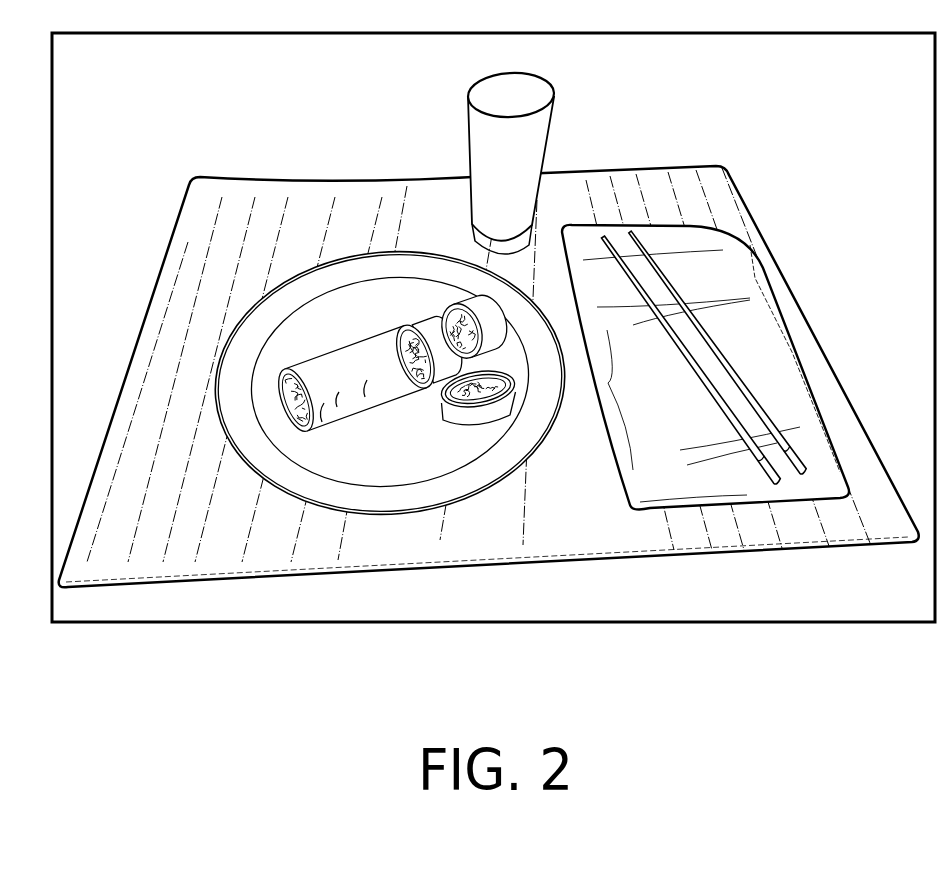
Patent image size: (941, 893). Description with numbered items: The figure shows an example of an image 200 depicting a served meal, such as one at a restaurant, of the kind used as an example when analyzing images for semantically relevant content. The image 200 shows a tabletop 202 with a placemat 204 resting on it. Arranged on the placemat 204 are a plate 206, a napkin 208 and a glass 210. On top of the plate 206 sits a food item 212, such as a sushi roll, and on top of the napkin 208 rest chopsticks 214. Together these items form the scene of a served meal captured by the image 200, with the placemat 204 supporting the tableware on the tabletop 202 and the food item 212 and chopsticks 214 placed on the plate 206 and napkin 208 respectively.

The image 200 is at (778, 624).
The tabletop 202 is at (878, 316).
The placemat 204 is at (122, 581).
The plate 206 is at (377, 513).
The napkin 208 is at (693, 512).
The glass 210 is at (472, 150).
The food item 212 is at (316, 428).
The chopsticks 214 is at (718, 406).